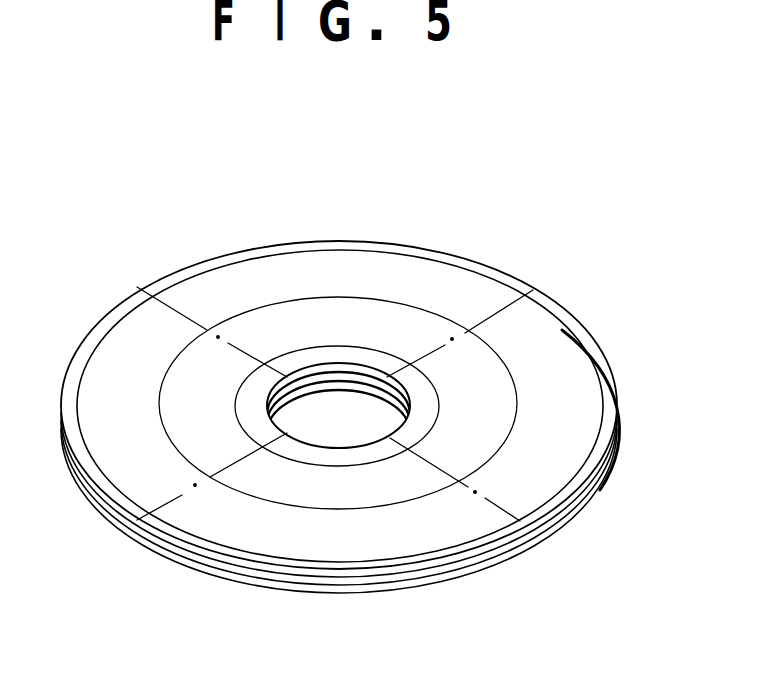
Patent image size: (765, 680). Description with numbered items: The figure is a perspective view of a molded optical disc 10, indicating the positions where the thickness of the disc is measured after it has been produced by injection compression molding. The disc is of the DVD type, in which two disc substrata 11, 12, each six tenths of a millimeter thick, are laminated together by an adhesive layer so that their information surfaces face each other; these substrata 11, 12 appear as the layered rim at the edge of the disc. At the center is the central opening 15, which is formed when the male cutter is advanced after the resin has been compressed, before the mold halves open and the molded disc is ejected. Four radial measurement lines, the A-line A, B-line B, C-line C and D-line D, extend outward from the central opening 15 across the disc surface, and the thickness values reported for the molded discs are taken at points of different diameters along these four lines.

The optical disc 10 is at (405, 243).
The disc substratum 11 is at (607, 368).
The disc substratum 12 is at (500, 560).
The central opening 15 is at (325, 400).
The A-line A is at (503, 514).
The B-line B is at (488, 318).
The C-line C is at (177, 310).
The D-line D is at (182, 496).